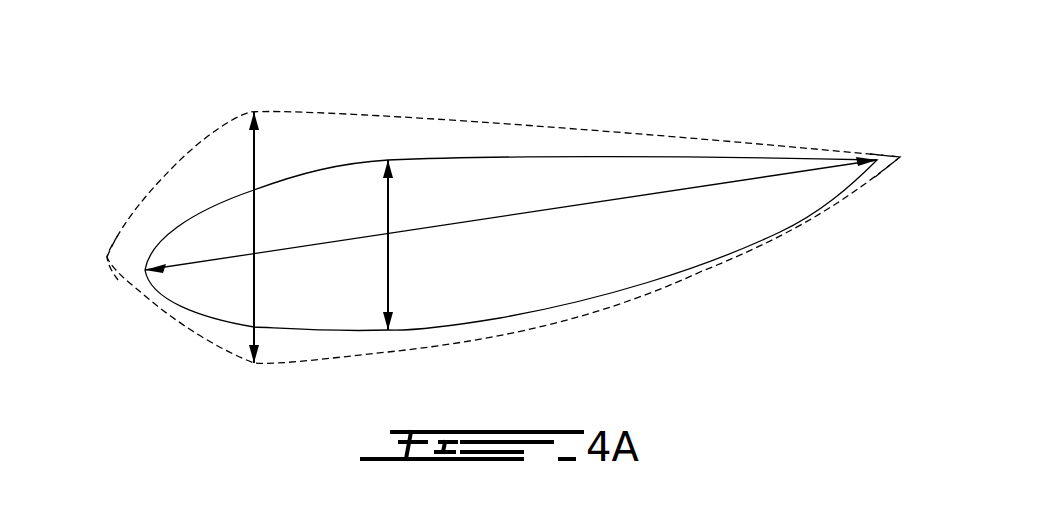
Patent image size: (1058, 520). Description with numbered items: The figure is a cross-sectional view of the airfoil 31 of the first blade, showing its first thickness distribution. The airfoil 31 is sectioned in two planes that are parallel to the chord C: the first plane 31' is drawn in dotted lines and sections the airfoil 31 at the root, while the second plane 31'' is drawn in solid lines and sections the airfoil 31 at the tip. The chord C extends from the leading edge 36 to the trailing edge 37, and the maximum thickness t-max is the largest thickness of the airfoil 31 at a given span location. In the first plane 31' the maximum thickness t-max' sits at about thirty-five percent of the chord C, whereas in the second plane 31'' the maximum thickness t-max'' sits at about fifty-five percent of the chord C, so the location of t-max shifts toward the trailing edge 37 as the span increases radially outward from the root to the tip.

The airfoil 31 is at (483, 193).
The first plane 31' is at (503, 200).
The second plane 31'' is at (511, 196).
The leading edge 36 is at (104, 257).
The trailing edge 37 is at (903, 157).